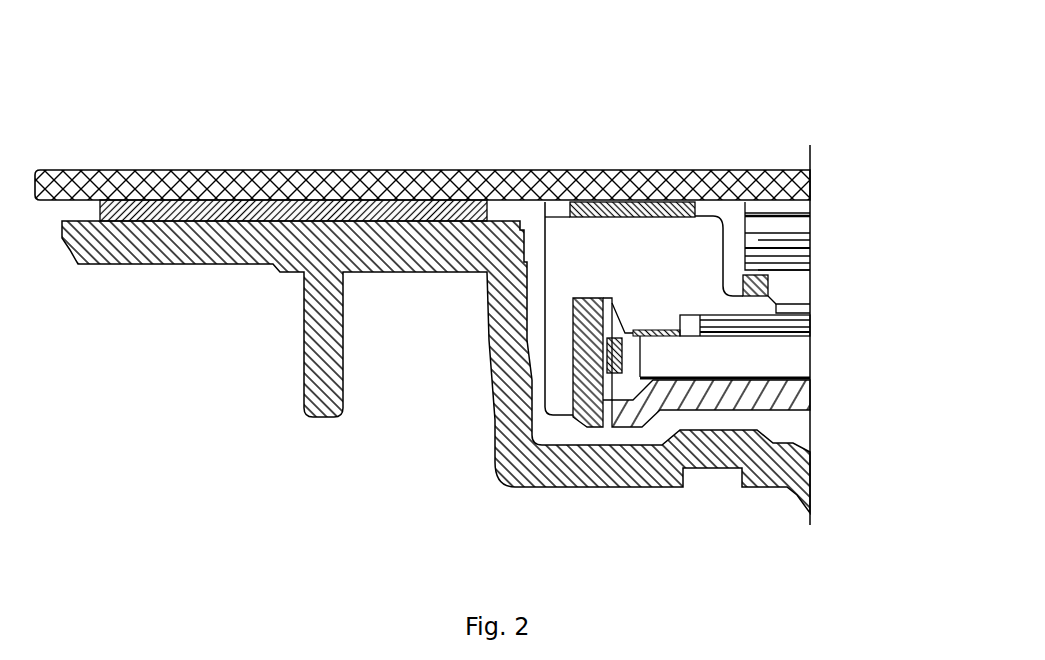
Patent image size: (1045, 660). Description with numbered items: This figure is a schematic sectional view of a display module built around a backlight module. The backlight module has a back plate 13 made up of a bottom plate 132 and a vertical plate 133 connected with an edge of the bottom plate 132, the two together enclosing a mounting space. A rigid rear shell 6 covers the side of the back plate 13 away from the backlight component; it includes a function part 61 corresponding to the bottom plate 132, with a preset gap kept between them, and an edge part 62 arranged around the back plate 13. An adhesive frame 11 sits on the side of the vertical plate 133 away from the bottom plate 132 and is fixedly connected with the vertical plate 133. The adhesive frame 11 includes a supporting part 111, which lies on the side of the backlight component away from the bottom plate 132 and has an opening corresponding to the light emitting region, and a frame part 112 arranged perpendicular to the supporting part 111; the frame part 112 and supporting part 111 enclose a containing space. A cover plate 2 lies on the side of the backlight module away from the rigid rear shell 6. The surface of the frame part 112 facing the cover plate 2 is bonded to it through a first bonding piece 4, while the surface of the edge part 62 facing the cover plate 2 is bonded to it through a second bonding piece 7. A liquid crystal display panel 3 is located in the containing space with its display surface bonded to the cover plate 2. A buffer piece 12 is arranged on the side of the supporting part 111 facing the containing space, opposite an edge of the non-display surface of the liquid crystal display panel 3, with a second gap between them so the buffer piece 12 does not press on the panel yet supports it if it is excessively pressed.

The cover plate 2 is at (750, 177).
The second bonding piece 7 is at (315, 210).
The first bonding piece 4 is at (618, 210).
The rigid rear shell 6 is at (436, 390).
The edge part 62 is at (263, 239).
The function part 61 is at (650, 502).
The frame part 112 is at (550, 240).
The adhesive frame 11 is at (598, 272).
The vertical plate 133 is at (585, 365).
The bottom plate 132 is at (680, 400).
The back plate 13 is at (770, 397).
The liquid crystal display panel 3 is at (787, 233).
The buffer piece 12 is at (763, 290).
The supporting part 111 is at (775, 305).